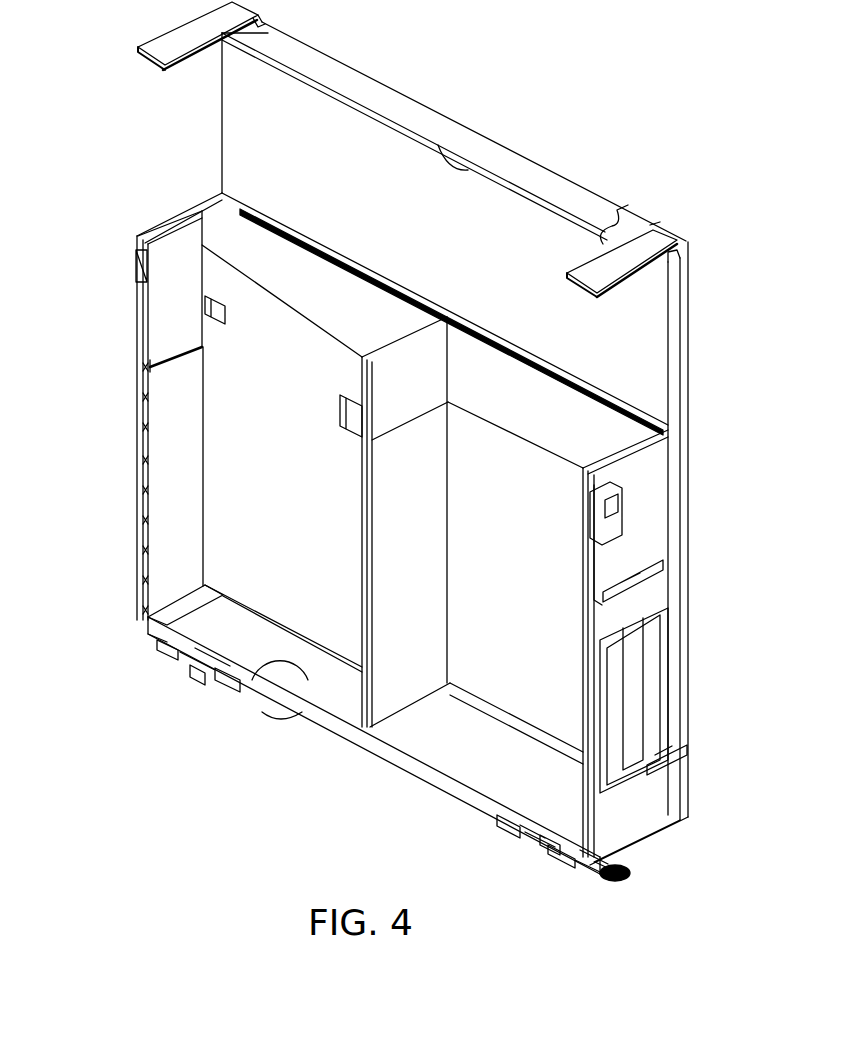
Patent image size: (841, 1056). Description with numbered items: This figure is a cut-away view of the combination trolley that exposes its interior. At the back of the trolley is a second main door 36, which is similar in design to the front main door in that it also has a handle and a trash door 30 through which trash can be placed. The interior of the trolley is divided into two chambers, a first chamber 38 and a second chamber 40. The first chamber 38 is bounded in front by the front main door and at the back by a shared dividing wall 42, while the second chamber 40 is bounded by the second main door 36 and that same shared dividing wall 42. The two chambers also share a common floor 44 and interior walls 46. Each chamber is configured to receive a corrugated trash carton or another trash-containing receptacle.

The trash door 30 is at (173, 296).
The second main door 36 is at (112, 241).
The first chamber 38 is at (543, 473).
The second chamber 40 is at (250, 353).
The shared dividing wall 42 is at (421, 548).
The floor 44 is at (253, 653).
The interior walls 46 is at (472, 457).